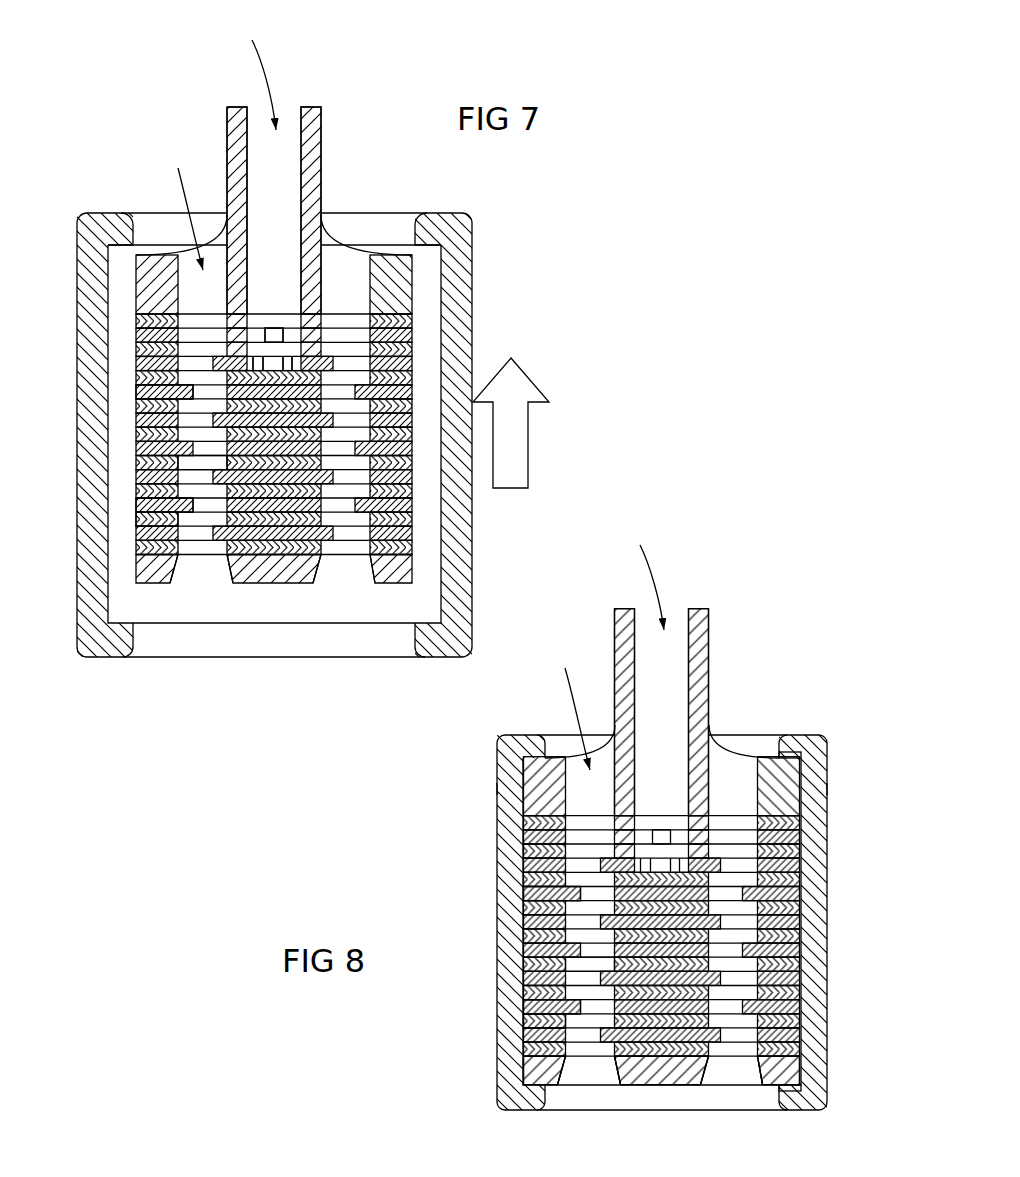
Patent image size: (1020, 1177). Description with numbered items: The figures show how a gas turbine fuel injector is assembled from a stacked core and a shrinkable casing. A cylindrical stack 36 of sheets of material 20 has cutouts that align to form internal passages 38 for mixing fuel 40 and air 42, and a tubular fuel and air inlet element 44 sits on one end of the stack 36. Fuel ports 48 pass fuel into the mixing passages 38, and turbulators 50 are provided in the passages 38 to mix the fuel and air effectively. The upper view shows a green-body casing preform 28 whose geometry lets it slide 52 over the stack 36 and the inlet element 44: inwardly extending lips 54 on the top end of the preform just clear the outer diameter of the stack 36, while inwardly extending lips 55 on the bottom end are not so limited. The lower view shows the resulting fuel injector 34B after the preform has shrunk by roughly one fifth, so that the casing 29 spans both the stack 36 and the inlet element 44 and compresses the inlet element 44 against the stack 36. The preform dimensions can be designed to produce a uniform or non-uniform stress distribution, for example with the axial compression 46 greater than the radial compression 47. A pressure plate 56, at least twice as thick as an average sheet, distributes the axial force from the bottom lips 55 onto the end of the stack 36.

In FIG. 7, the sheets of material 20 is at (150, 523).
In FIG. 8, the sheets of material 20 is at (542, 1023).
In FIG. 7, the casing preform 28 is at (88, 555).
In FIG. 8, the casing 29 is at (505, 1048).
In FIG. 8, the fuel injector 34B is at (456, 832).
In FIG. 7, the cylindrical stack 36 is at (153, 391).
In FIG. 8, the cylindrical stack 36 is at (540, 893).
In FIG. 7, the internal passages 38 is at (197, 463).
In FIG. 8, the internal passages 38 is at (585, 966).
In FIG. 7, the fuel 40 is at (270, 70).
In FIG. 8, the fuel 40 is at (658, 572).
In FIG. 7, the air 42 is at (192, 196).
In FIG. 8, the air 42 is at (580, 697).
In FIG. 7, the fuel and air inlet element 44 is at (313, 162).
In FIG. 8, the fuel and air inlet element 44 is at (703, 665).
In FIG. 8, the axial compression 46 is at (790, 755).
In FIG. 8, the radial compression 47 is at (520, 789).
In FIG. 7, the fuel ports 48 is at (290, 364).
In FIG. 7, the turbulators 50 is at (213, 530).
In FIG. 8, the turbulators 50 is at (607, 1037).
In FIG. 7, the slide 52 is at (532, 377).
In FIG. 7, the inwardly extending lips 54 is at (423, 225).
In FIG. 8, the inwardly extending lips 54 is at (532, 745).
In FIG. 7, the inwardly extending lips 55 is at (423, 641).
In FIG. 8, the inwardly extending lips 55 is at (533, 1100).
In FIG. 8, the pressure plate 56 is at (538, 1073).